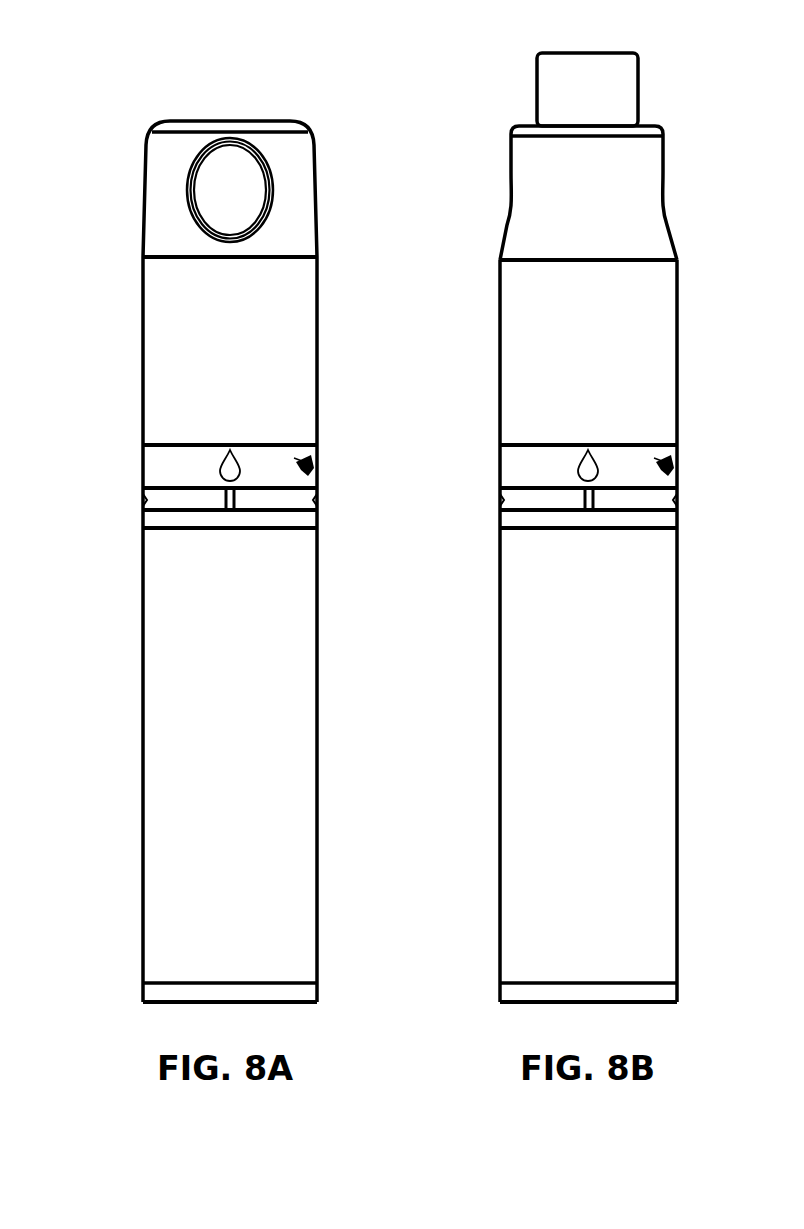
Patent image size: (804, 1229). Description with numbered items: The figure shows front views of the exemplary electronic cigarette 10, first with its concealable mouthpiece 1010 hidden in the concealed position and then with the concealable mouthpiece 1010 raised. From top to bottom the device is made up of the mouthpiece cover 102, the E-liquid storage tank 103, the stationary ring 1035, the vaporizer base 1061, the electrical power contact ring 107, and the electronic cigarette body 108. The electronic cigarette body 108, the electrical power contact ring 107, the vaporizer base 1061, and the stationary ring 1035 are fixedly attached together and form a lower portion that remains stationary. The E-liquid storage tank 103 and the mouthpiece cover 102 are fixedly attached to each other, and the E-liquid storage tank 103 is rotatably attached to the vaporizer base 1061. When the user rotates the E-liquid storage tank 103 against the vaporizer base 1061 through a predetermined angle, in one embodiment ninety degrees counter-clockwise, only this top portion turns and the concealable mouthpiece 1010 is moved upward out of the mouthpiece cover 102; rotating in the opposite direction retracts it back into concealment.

In FIG. 8A, the electronic cigarette 10 is at (93, 111).
In FIG. 8A, the mouthpiece cover 102 is at (163, 226).
In FIG. 8B, the mouthpiece cover 102 is at (533, 227).
In FIG. 8A, the E-liquid storage tank 103 is at (296, 369).
In FIG. 8B, the E-liquid storage tank 103 is at (519, 369).
In FIG. 8A, the stationary ring 1035 is at (295, 461).
In FIG. 8B, the stationary ring 1035 is at (520, 463).
In FIG. 8A, the vaporizer base 1061 is at (295, 502).
In FIG. 8B, the vaporizer base 1061 is at (520, 502).
In FIG. 8A, the electrical power contact ring 107 is at (295, 527).
In FIG. 8B, the electrical power contact ring 107 is at (520, 527).
In FIG. 8A, the electronic cigarette body 108 is at (293, 645).
In FIG. 8B, the electronic cigarette body 108 is at (521, 645).
In FIG. 8B, the concealable mouthpiece 1010 is at (559, 90).